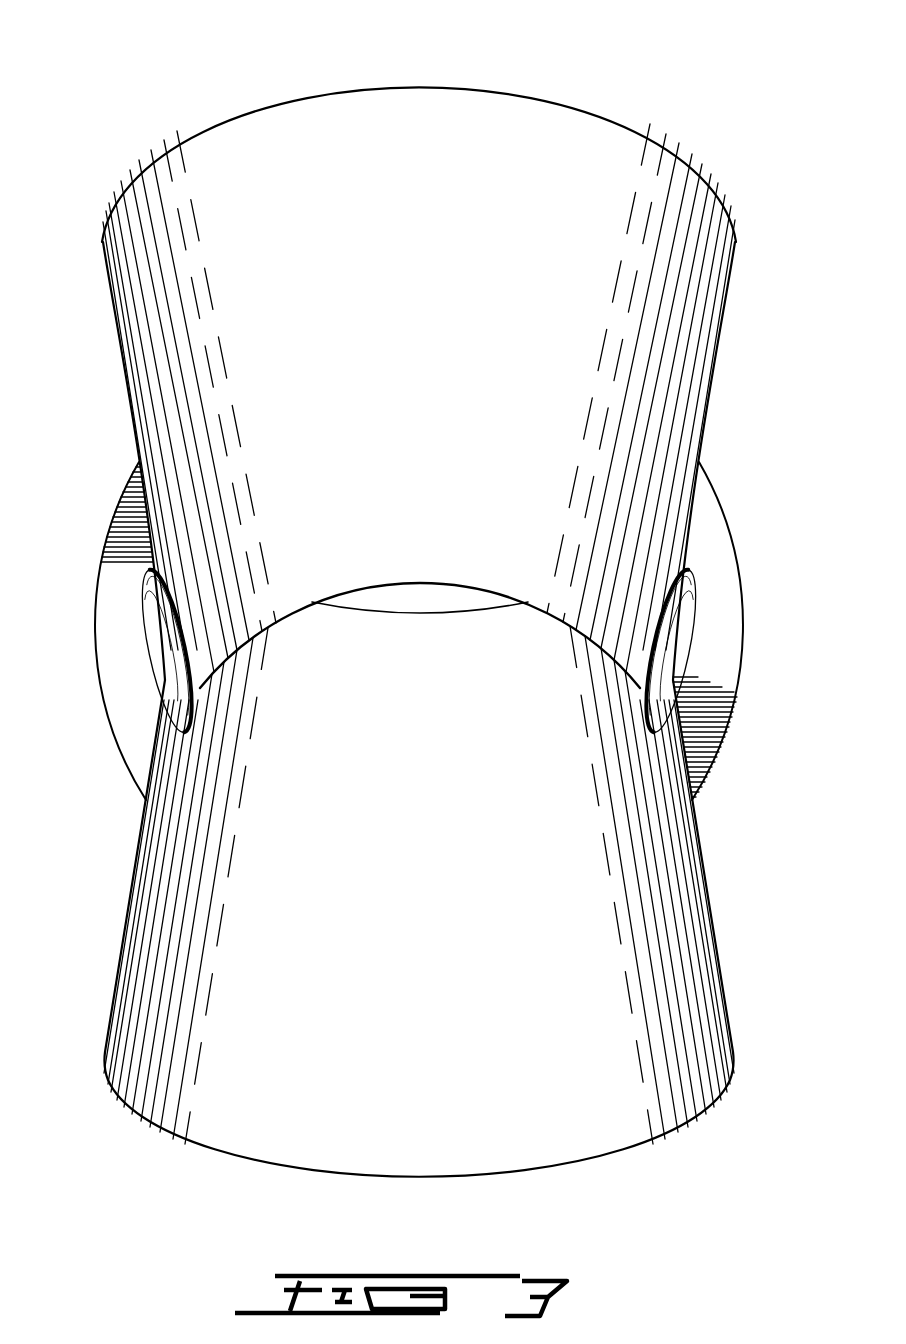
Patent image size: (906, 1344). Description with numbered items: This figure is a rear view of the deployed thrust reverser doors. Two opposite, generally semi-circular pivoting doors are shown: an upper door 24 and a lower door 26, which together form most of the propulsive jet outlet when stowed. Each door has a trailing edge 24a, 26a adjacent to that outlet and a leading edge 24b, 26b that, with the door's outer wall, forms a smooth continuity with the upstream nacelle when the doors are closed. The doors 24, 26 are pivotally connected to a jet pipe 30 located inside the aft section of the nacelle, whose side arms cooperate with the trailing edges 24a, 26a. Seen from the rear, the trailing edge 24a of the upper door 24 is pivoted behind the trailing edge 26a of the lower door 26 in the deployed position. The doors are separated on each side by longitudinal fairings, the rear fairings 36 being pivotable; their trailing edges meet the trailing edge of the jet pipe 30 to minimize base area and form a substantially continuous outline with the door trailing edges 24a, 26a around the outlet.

The upper door 24 is at (419, 344).
The trailing edge of upper door 24a is at (428, 580).
The leading edge of upper door 24b is at (578, 92).
The lower door 26 is at (401, 901).
The trailing edge of lower door 26a is at (421, 614).
The leading edge of lower door 26b is at (647, 1143).
The jet pipe 30 is at (122, 625).
The rear fairing 36 is at (660, 667).